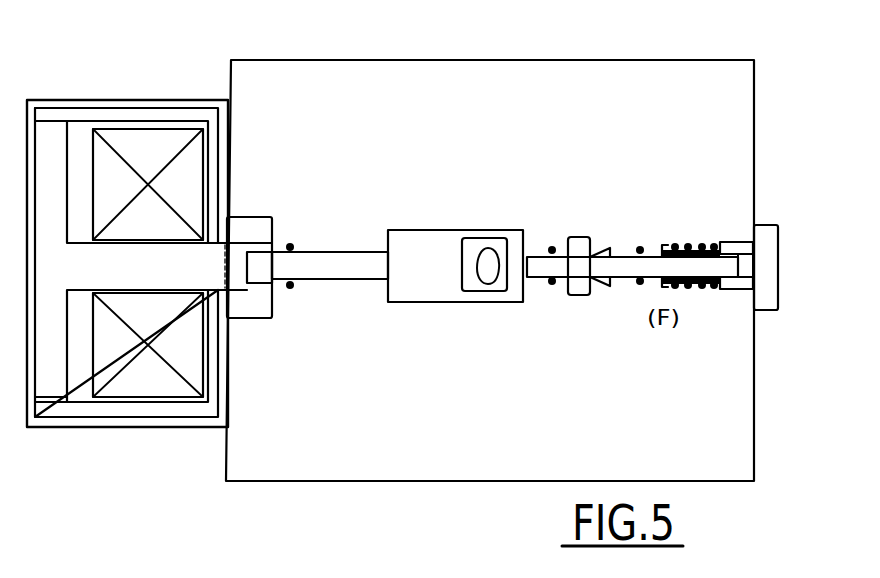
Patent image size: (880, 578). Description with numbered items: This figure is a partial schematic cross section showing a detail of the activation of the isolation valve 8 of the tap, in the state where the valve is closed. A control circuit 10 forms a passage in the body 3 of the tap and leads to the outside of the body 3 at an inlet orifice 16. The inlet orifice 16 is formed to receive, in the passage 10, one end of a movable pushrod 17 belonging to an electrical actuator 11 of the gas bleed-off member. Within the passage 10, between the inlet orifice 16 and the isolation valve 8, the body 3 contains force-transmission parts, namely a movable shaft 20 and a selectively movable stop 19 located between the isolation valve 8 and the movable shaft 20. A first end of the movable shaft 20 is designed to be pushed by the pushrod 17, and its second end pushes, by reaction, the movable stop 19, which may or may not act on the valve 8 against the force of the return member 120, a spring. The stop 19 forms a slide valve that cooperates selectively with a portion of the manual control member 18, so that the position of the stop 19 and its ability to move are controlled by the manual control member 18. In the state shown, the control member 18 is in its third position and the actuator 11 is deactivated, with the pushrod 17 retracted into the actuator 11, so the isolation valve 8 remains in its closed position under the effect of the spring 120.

The body 3 is at (607, 60).
The isolation valve 8 is at (619, 265).
The control circuit 10 is at (313, 282).
The actuator 11 is at (103, 428).
The inlet orifice 16 is at (241, 320).
The pushrod 17 is at (243, 285).
The manual control member 18 is at (488, 250).
The movable stop 19 is at (420, 283).
The movable shaft 20 is at (365, 265).
The return member 120 is at (686, 243).